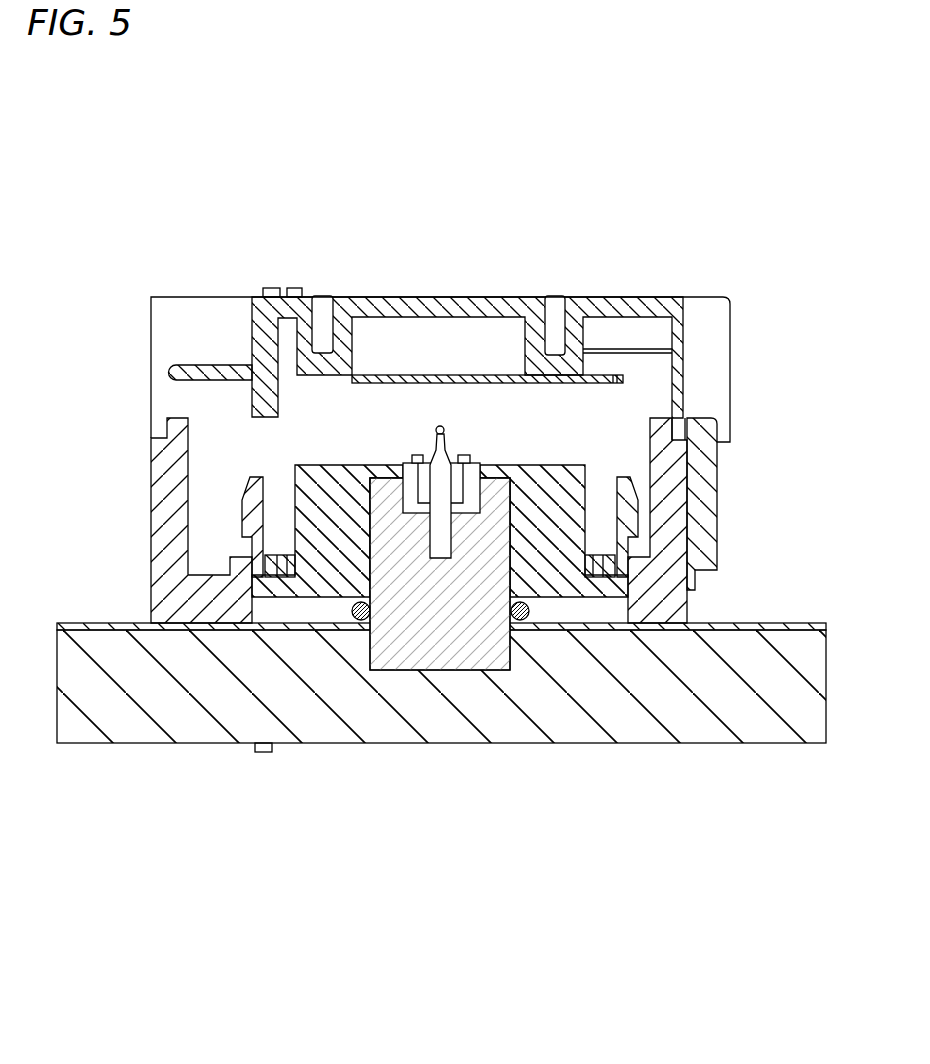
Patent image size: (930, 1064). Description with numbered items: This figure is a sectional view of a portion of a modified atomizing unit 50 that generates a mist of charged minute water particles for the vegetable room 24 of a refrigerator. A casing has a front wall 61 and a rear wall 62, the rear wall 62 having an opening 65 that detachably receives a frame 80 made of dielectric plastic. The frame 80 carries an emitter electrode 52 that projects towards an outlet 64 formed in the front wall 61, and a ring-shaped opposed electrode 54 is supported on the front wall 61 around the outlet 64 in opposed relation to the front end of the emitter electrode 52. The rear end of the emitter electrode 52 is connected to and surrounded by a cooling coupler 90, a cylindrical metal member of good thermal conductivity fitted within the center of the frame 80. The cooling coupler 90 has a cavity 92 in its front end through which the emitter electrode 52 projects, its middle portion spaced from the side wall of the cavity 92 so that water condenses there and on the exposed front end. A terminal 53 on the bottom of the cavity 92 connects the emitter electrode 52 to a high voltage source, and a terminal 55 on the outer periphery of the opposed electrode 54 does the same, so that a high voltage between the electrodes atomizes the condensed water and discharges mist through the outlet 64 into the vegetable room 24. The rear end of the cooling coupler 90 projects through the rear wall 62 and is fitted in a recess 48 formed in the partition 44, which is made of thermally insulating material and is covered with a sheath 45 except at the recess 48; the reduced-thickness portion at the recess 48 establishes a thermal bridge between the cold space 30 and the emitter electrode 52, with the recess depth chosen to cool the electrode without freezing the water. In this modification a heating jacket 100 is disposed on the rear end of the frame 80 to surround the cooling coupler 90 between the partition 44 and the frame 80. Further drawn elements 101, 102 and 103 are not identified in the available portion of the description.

The vegetable room 24 is at (425, 227).
The cold space 30 is at (455, 798).
The partition 44 is at (680, 720).
The sheath 45 is at (774, 623).
The recess 48 is at (425, 660).
The atomizing unit 50 is at (152, 297).
The emitter electrode 52 is at (445, 482).
The terminal 53 is at (468, 505).
The opposed electrode 54 is at (387, 383).
The terminal 55 is at (620, 375).
The front wall 61 is at (612, 305).
The rear wall 62 is at (180, 605).
The outlet 64 is at (463, 308).
The opening 65 is at (272, 598).
The frame 80 is at (343, 570).
The cooling coupler 90 is at (472, 643).
The cavity 92 is at (413, 495).
The heating jacket 100 is at (355, 620).
The projection 101 is at (255, 753).
The protrusion 102 is at (267, 288).
The protrusion 103 is at (300, 288).